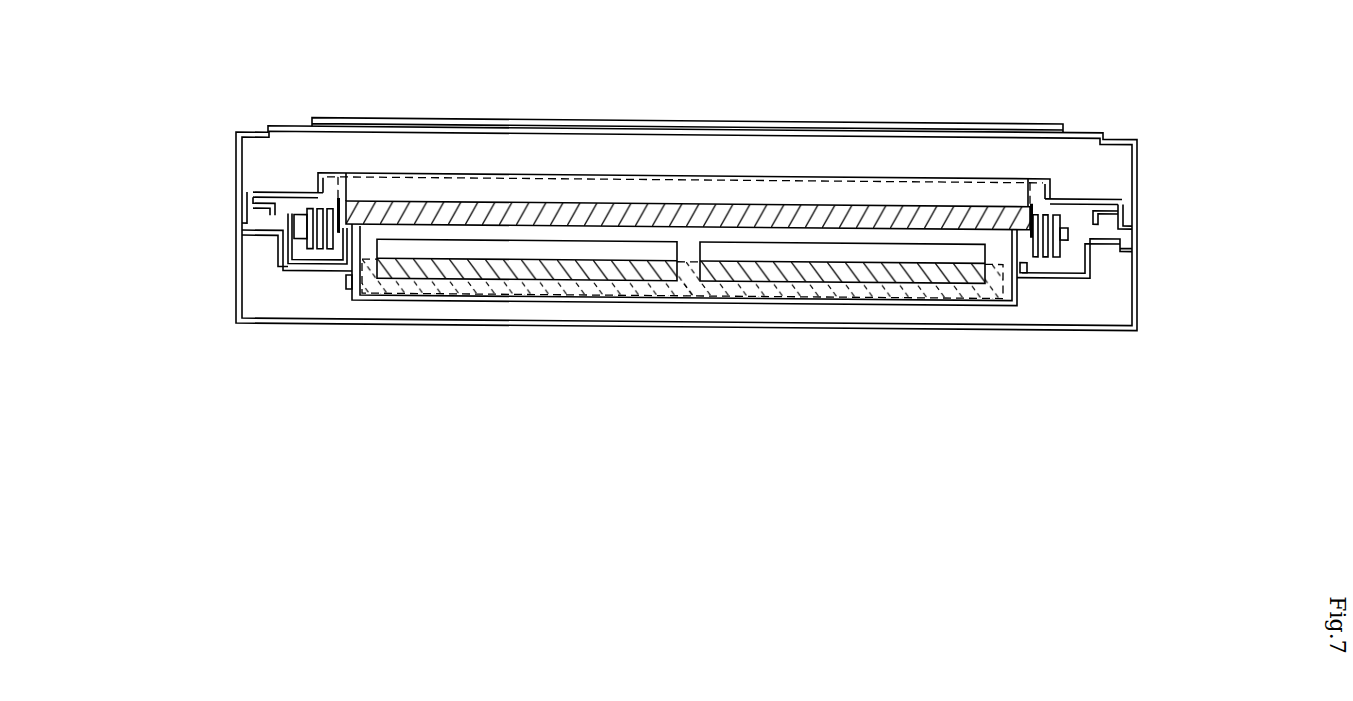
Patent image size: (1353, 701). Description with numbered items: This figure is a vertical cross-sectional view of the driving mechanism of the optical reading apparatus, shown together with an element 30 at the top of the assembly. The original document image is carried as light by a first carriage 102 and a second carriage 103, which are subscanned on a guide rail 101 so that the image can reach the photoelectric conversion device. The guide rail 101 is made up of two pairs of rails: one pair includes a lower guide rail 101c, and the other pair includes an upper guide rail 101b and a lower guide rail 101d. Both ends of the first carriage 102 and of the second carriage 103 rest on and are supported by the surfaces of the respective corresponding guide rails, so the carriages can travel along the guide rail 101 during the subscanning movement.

The top plate / cover 30 is at (697, 93).
The guide rail 101 is at (102, 166).
The upper guide rail 101b is at (1130, 197).
The lower guide rail 101c is at (252, 240).
The lower guide rail 101d is at (250, 200).
The first carriage 102 is at (295, 192).
The second carriage 103 is at (281, 269).